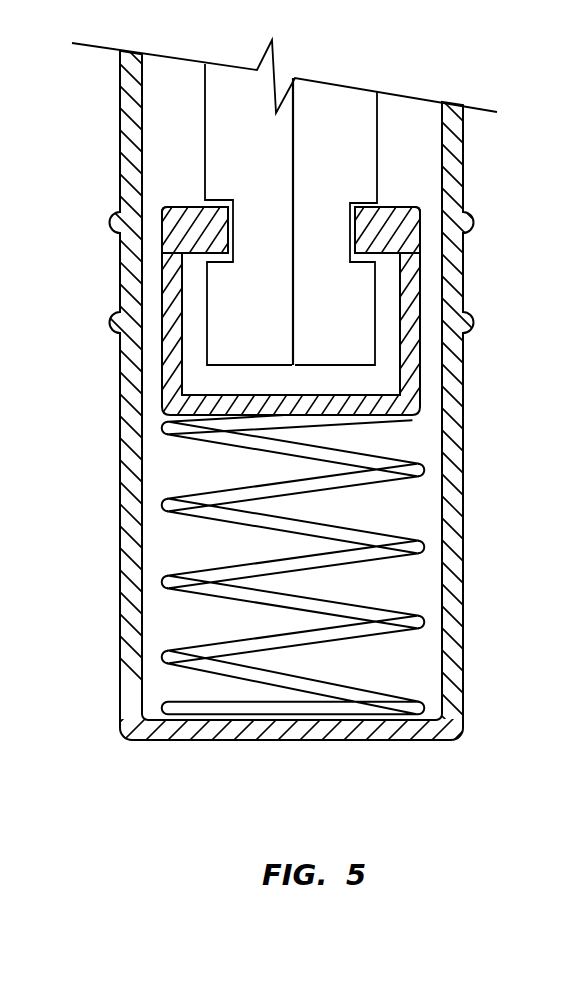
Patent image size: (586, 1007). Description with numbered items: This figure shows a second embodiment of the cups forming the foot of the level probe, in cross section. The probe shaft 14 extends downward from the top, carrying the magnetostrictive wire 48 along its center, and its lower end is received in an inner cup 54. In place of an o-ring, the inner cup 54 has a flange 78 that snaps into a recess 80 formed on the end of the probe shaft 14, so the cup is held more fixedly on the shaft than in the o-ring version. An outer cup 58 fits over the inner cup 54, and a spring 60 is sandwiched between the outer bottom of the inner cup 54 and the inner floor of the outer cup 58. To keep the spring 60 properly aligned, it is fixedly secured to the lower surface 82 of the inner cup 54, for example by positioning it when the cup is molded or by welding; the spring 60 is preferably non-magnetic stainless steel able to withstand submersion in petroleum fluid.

The probe shaft 14 is at (377, 160).
The magnetostrictive wire 48 is at (293, 158).
The inner cup 54 is at (418, 272).
The outer cup 58 is at (463, 523).
The spring 60 is at (238, 647).
The flange 78 is at (413, 208).
The recess 80 is at (240, 219).
The lower surface 82 is at (373, 423).